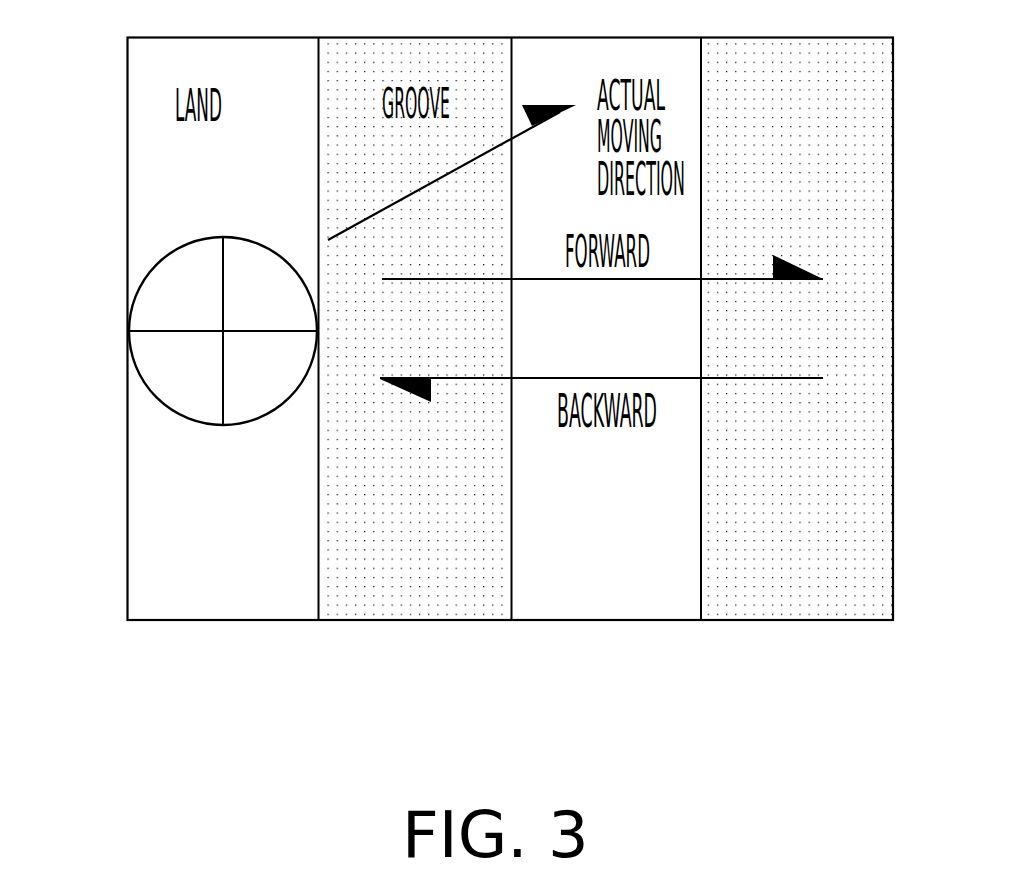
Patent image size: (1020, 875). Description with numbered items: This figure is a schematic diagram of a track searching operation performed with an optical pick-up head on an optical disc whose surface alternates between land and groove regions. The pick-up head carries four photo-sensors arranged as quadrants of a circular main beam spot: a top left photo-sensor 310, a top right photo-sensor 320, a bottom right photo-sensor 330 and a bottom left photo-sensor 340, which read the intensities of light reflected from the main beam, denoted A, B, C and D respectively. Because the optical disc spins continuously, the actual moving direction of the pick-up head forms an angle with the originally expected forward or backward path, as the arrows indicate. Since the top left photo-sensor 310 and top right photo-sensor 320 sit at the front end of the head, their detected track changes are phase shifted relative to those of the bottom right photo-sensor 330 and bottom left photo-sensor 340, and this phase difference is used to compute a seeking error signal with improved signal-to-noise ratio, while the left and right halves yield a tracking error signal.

The top left photo-sensor 310 is at (176, 290).
The top right photo-sensor 320 is at (258, 275).
The bottom right photo-sensor 330 is at (267, 397).
The bottom left photo-sensor 340 is at (172, 368).